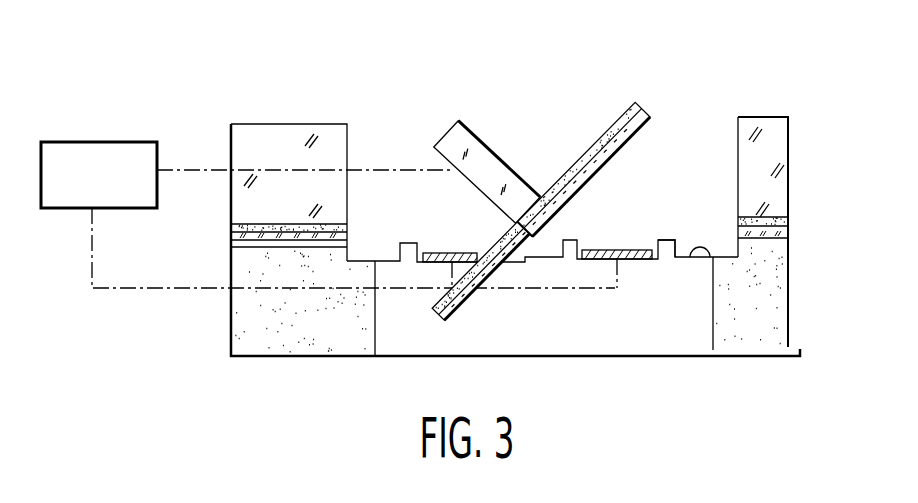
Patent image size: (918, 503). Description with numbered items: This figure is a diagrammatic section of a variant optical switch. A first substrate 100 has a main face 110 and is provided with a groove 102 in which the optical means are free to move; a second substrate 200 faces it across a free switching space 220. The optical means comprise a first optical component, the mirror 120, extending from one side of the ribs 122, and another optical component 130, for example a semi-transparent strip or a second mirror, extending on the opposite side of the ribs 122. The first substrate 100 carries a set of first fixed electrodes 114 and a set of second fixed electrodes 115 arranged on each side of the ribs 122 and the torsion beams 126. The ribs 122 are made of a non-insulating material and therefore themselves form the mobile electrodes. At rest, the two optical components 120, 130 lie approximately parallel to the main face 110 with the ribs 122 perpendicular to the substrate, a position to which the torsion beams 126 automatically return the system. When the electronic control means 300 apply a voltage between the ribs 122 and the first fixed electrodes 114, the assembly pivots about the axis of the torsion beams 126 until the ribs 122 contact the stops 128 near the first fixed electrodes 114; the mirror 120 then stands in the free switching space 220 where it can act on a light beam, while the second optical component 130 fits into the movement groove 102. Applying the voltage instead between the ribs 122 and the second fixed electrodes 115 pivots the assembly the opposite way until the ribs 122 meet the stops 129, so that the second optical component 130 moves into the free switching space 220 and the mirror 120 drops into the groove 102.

The first substrate 100 is at (782, 312).
The groove 102 is at (632, 320).
The main face 110 is at (700, 260).
The first fixed electrodes 114 is at (452, 253).
The second fixed electrodes 115 is at (617, 250).
The mirror 120 is at (645, 105).
The ribs 122 is at (446, 145).
The torsion beams 126 is at (547, 237).
The stops 128 is at (402, 242).
The stops 129 is at (673, 238).
The second optical component 130 is at (440, 320).
The second substrate 200 is at (800, 180).
The free switching space 220 is at (665, 160).
The electronic control means 300 is at (137, 142).